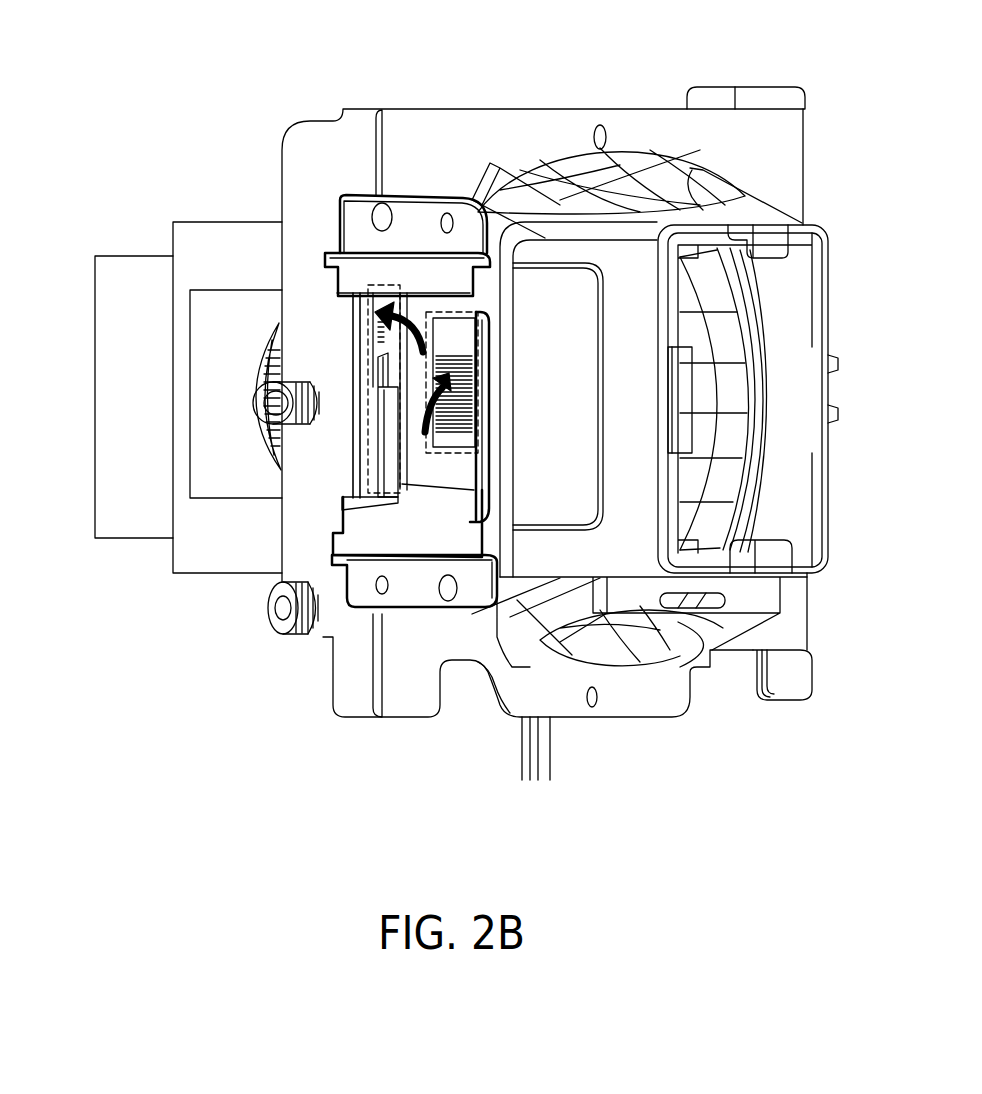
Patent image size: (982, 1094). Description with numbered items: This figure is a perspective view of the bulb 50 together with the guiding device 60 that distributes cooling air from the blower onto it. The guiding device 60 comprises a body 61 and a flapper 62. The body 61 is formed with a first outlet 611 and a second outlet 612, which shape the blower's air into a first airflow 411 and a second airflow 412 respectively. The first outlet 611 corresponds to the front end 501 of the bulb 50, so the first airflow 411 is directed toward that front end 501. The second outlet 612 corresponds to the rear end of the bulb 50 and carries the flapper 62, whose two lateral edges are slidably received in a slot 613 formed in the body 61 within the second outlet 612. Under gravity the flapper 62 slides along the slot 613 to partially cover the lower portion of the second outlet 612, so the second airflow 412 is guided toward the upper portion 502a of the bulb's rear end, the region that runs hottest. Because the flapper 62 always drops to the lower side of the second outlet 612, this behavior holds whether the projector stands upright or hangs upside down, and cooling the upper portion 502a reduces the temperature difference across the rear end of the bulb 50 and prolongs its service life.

The guiding device 60 is at (306, 336).
The body 61 is at (353, 223).
The flapper 62 is at (387, 453).
The first outlet 611 is at (480, 342).
The second outlet 612 is at (367, 312).
The slot 613 is at (382, 368).
The second airflow 412 is at (390, 287).
The first airflow 411 is at (433, 427).
The bulb 50 is at (474, 312).
The front end 501 is at (463, 378).
The upper portion 502a is at (372, 332).